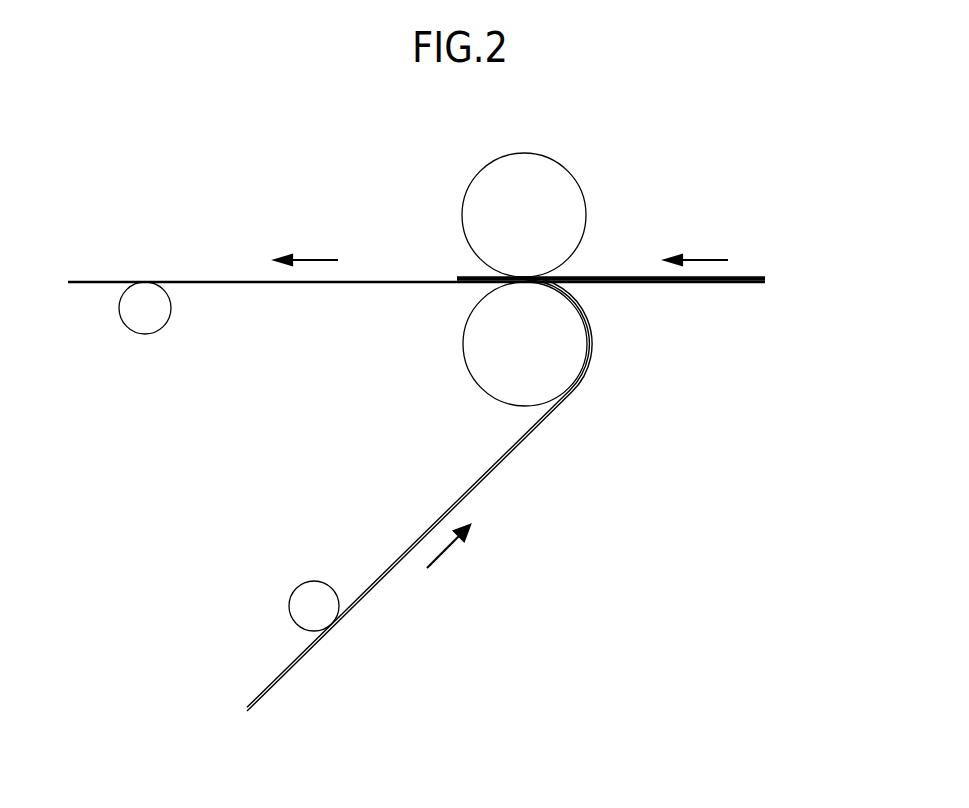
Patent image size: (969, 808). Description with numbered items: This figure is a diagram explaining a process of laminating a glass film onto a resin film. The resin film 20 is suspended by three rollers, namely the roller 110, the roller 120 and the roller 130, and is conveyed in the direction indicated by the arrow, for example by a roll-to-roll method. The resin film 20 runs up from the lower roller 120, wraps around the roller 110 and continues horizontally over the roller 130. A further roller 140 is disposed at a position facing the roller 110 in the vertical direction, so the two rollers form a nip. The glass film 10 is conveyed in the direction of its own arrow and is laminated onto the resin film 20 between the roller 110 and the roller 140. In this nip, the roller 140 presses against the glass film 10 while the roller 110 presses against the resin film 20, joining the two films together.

The glass film 10 is at (752, 276).
The resin film 20 is at (519, 445).
The roller 110 is at (485, 345).
The roller 120 is at (313, 596).
The roller 130 is at (155, 312).
The roller 140 is at (525, 178).